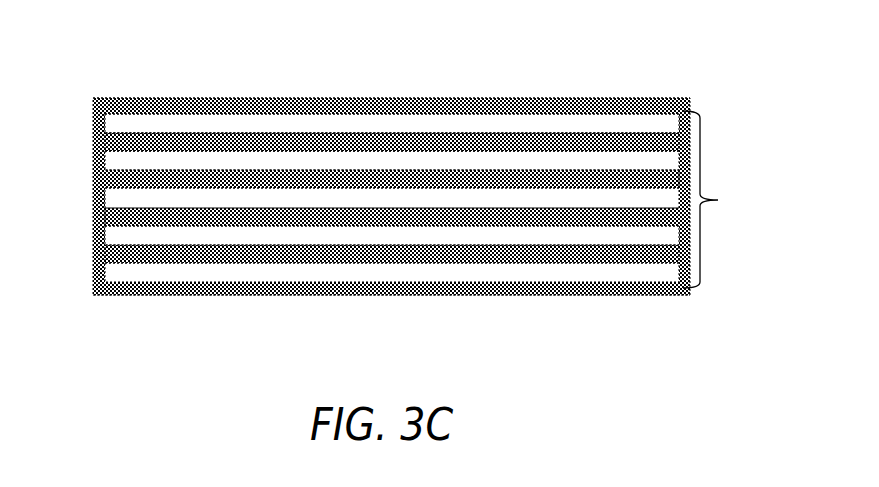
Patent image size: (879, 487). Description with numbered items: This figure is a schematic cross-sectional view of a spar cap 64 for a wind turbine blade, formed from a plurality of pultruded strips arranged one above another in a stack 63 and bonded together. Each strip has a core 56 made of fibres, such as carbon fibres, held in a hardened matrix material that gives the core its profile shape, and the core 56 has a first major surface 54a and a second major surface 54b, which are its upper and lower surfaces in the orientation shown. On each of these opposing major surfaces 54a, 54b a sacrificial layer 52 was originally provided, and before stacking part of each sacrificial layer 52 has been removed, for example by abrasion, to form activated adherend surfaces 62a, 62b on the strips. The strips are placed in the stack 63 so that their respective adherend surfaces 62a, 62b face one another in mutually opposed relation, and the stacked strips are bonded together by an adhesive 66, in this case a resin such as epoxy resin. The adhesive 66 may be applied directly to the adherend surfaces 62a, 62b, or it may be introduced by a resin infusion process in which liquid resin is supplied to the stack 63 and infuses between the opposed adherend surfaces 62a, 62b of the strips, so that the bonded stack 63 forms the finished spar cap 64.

The sacrificial layers 52 is at (630, 137).
The first major surface 54a is at (193, 115).
The second major surface 54b is at (268, 133).
The core 56 is at (535, 122).
The activated adherend surface 62a is at (391, 108).
The activated adherend surface 62b is at (447, 138).
The stack 63 is at (717, 199).
The spar cap 64 is at (763, 122).
The adhesive 66 is at (543, 292).